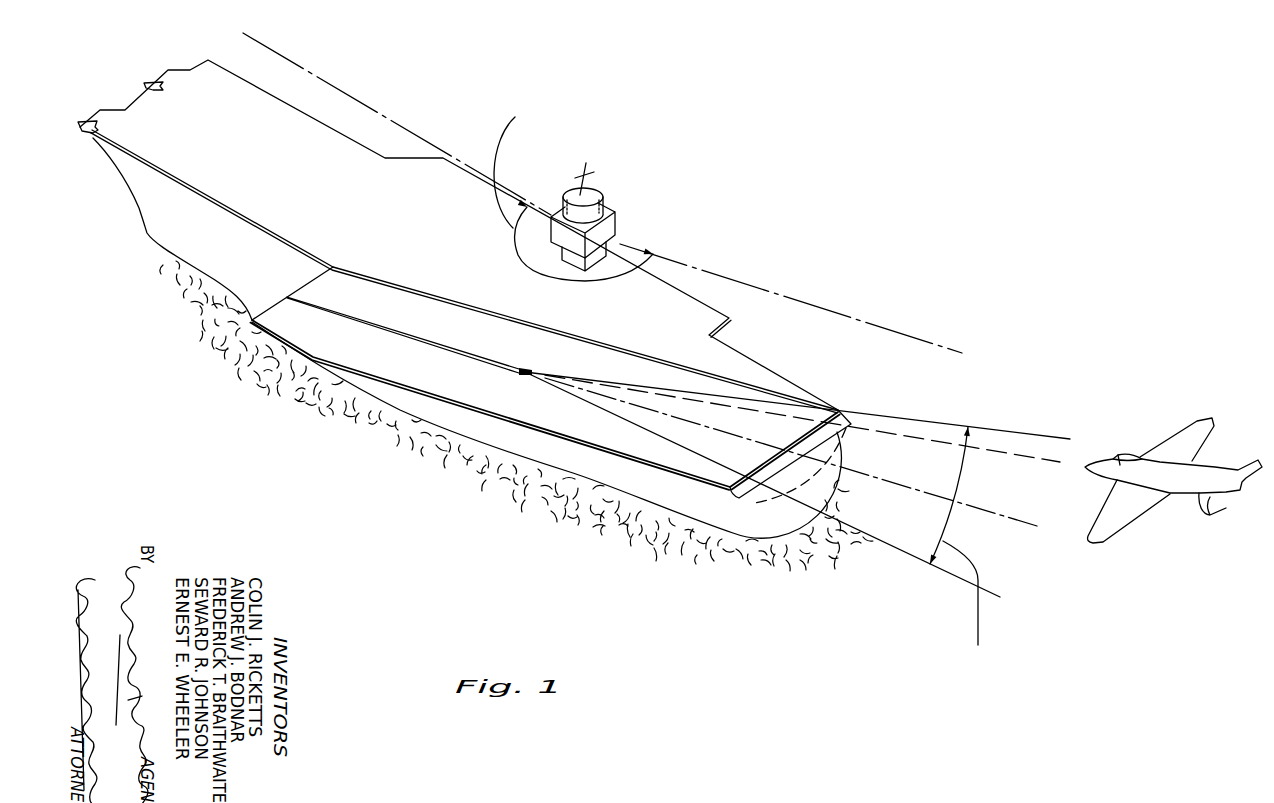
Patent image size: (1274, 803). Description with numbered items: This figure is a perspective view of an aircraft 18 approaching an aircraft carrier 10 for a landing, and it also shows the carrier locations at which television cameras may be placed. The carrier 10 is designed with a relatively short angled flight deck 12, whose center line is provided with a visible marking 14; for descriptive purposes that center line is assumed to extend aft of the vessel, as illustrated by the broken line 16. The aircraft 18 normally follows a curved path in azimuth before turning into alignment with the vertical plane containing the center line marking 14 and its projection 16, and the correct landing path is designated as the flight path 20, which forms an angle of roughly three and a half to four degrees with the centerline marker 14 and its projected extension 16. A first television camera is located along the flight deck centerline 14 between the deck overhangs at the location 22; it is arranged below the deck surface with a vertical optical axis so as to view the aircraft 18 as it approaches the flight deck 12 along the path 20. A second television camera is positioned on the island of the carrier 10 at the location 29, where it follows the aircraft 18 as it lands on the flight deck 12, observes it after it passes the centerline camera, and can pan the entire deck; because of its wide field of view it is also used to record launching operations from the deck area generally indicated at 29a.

The aircraft carrier 10 is at (345, 135).
The angled flight deck 12 is at (428, 376).
The center line marking 14 is at (467, 352).
The broken line 16 is at (1028, 528).
The aircraft 18 is at (1186, 499).
The flight path 20 is at (991, 447).
The television camera location 22 is at (510, 374).
The island camera location 29 is at (578, 220).
The launching area 29a is at (217, 148).